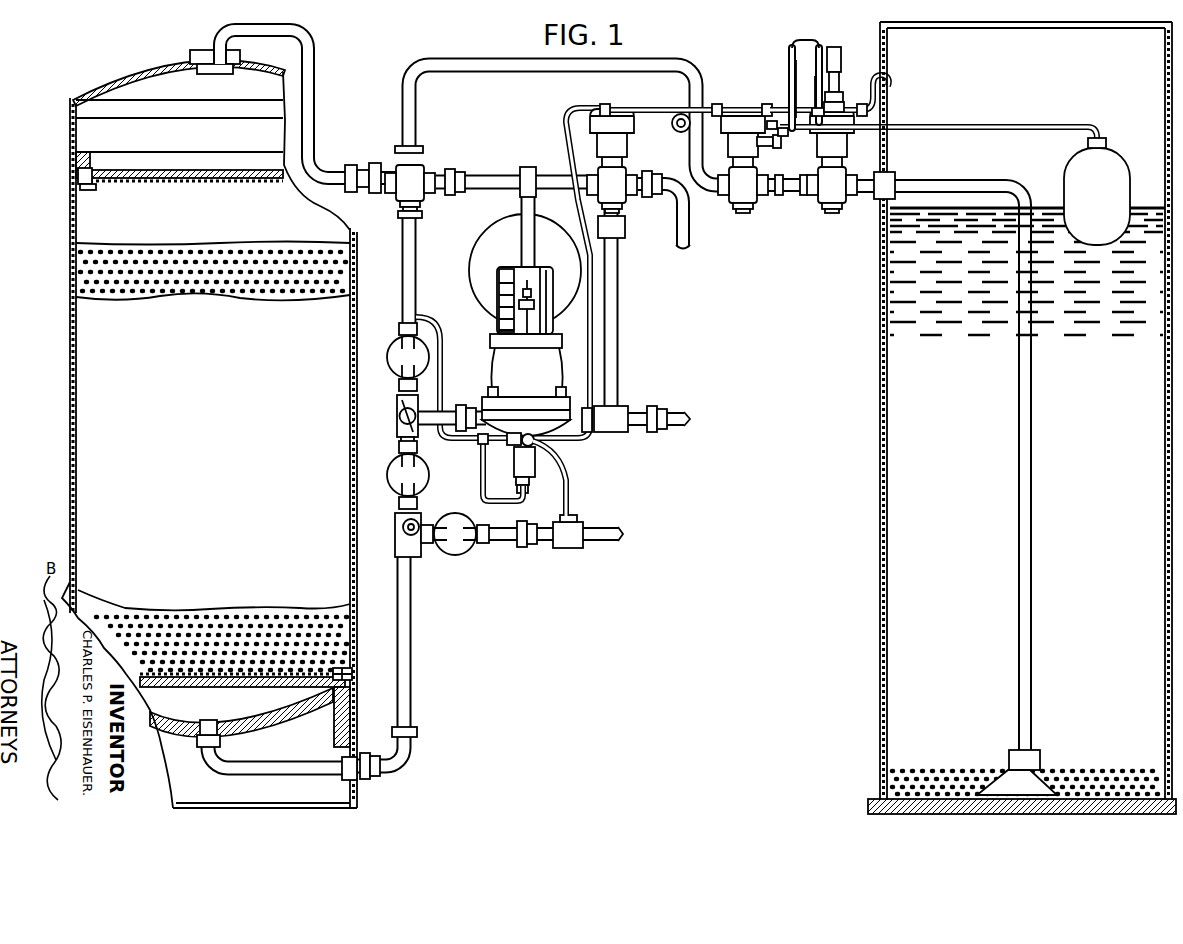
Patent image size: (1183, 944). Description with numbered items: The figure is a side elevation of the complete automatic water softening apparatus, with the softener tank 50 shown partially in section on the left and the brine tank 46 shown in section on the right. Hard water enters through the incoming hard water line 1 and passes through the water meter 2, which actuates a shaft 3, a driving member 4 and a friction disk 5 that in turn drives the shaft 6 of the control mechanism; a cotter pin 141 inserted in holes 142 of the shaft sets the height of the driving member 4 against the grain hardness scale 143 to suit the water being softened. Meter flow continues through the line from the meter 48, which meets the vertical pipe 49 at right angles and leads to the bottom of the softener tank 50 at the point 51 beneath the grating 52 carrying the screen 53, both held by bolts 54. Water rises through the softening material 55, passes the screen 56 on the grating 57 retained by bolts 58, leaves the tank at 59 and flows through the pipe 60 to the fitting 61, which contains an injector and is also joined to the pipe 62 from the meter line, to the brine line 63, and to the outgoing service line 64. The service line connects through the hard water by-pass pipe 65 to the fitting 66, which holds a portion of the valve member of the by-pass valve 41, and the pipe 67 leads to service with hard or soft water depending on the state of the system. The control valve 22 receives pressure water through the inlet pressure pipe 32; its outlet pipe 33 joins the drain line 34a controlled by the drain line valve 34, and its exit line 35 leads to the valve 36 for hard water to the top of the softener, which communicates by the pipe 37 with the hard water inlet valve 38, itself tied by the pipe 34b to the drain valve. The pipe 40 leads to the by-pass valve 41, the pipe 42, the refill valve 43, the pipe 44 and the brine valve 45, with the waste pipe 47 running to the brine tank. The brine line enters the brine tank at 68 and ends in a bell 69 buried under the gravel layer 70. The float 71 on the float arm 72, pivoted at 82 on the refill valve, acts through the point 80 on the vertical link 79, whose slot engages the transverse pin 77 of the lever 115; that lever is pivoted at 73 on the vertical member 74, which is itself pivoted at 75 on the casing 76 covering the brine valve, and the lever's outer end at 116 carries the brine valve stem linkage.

The incoming hard water line 1 is at (681, 415).
The water meter 2 is at (556, 378).
The shaft 3 is at (552, 342).
The driving member 4 is at (536, 310).
The friction disk 5 is at (549, 230).
The shaft 6 is at (523, 270).
The control valve 22 is at (514, 463).
The inlet pressure pipe 32 is at (479, 490).
The outlet pipe 33 is at (570, 489).
The drain line valve 34 is at (459, 554).
The drain line 34a is at (524, 548).
The pipe 34b is at (421, 520).
The exit line 35 is at (444, 343).
The valve 36 is at (393, 345).
The pipe 37 is at (397, 415).
The hard water inlet valve 38 is at (391, 470).
The pipe 40 is at (596, 379).
The by-pass valve 41 is at (627, 150).
The pipe 42 is at (657, 107).
The refill valve 43 is at (752, 150).
The pipe 44 is at (781, 135).
The brine valve 45 is at (845, 150).
The brine tank 46 is at (880, 352).
The waste pipe 47 is at (891, 84).
The line from the meter 48 is at (450, 408).
The vertical pipe 49 is at (411, 636).
The softener tank 50 is at (76, 366).
The point 51 is at (210, 720).
The grating 52 is at (163, 688).
The screen 53 is at (256, 688).
The bolts 54 is at (352, 672).
The softening material 55 is at (70, 248).
The screen 56 is at (152, 183).
The grating 57 is at (156, 170).
The bolts 58 is at (88, 190).
The outlet point 59 is at (210, 74).
The pipe 60 is at (317, 106).
The fitting 61 is at (426, 166).
The pipe 62 is at (416, 243).
The brine line 63 is at (471, 59).
The outgoing service line 64 is at (493, 174).
The hard water by-pass pipe 65 is at (621, 353).
The fitting 66 is at (622, 196).
The pipe 67 is at (692, 220).
The entry point 68 is at (894, 177).
The bell 69 is at (1009, 762).
The gravel layer 70 is at (1080, 790).
The float 71 is at (1130, 170).
The float arm 72 is at (1008, 125).
The pivot 73 is at (819, 48).
The vertical member 74 is at (817, 76).
The pivot 75 is at (818, 110).
The casing 76 is at (842, 108).
The transverse pin 77 is at (792, 48).
The vertical link 79 is at (790, 71).
The connection point 80 is at (808, 142).
The pivot 82 is at (777, 128).
The lever 115 is at (806, 42).
The pivot 116 is at (841, 56).
The cotter pin 141 is at (534, 304).
The holes 142 is at (531, 292).
The grain hardness scale 143 is at (499, 300).